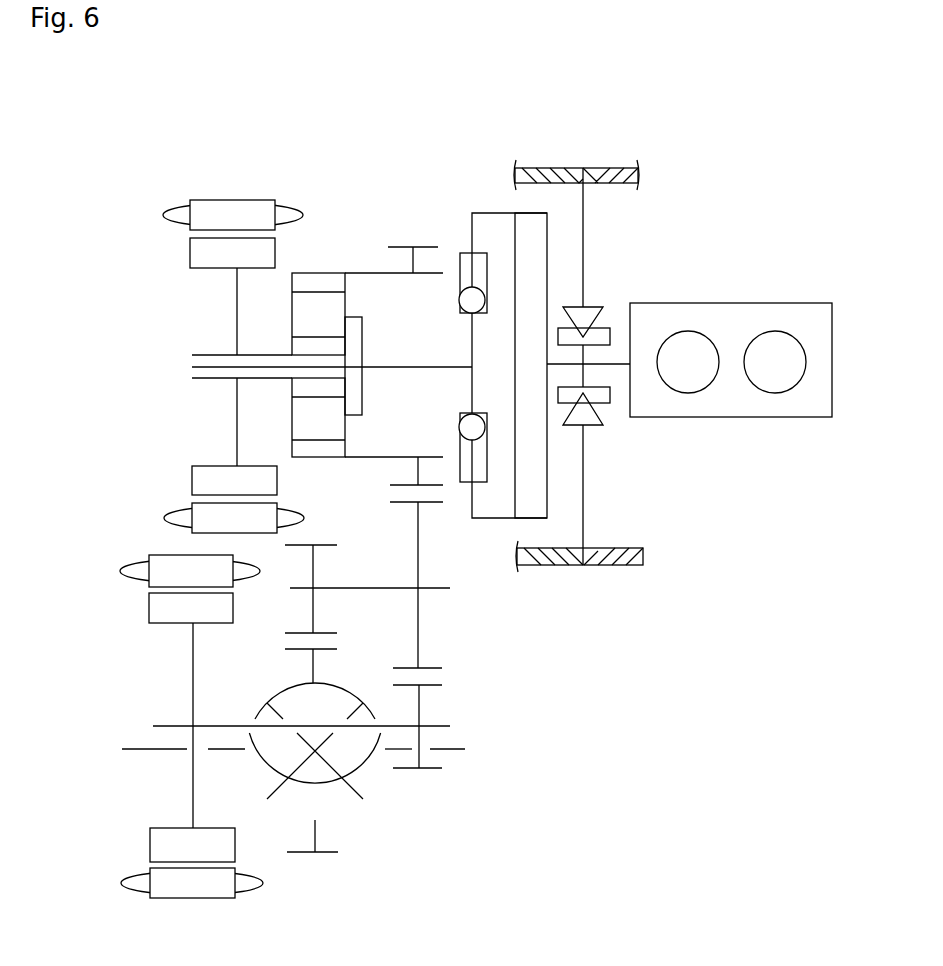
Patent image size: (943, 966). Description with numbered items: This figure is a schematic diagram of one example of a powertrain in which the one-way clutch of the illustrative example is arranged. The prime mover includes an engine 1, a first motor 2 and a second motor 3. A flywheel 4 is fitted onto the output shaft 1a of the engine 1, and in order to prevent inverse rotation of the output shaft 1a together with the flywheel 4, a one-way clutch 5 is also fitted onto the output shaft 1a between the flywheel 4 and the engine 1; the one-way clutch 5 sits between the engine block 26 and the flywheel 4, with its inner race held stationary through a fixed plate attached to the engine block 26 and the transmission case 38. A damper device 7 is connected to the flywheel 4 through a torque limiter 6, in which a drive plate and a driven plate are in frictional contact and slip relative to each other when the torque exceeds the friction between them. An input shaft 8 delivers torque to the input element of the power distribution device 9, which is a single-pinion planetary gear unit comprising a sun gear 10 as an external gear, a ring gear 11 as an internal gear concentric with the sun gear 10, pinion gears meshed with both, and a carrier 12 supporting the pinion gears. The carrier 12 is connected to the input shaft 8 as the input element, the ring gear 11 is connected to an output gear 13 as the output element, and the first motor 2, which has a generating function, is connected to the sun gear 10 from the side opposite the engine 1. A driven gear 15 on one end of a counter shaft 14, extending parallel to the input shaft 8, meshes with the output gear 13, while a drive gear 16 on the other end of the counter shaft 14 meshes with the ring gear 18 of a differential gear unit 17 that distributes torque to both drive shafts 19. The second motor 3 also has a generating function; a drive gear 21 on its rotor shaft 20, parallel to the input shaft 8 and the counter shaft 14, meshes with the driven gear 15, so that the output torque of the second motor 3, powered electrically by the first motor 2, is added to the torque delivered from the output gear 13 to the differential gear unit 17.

The engine 1 is at (735, 414).
The output shaft 1a is at (620, 372).
The first motor 2 is at (157, 283).
The second motor 3 is at (147, 665).
The flywheel 4 is at (528, 235).
The one-way clutch 5 is at (660, 226).
The torque limiter 6 is at (462, 220).
The damper device 7 is at (455, 300).
The input shaft 8 is at (420, 369).
The power distribution device 9 is at (345, 317).
The sun gear 10 is at (298, 388).
The ring gear 11 is at (300, 290).
The carrier 12 is at (364, 329).
The output gear 13 is at (404, 247).
The counter shaft 14 is at (383, 587).
The driven gear 15 is at (436, 500).
The drive gear 16 is at (329, 545).
The differential gear unit 17 is at (356, 812).
The ring gear 18 is at (338, 649).
The drive shafts 19 is at (452, 752).
The rotor shaft 20 is at (228, 724).
The drive gear 21 is at (433, 770).
The engine block 26 is at (612, 168).
The transmission case 38 is at (553, 168).